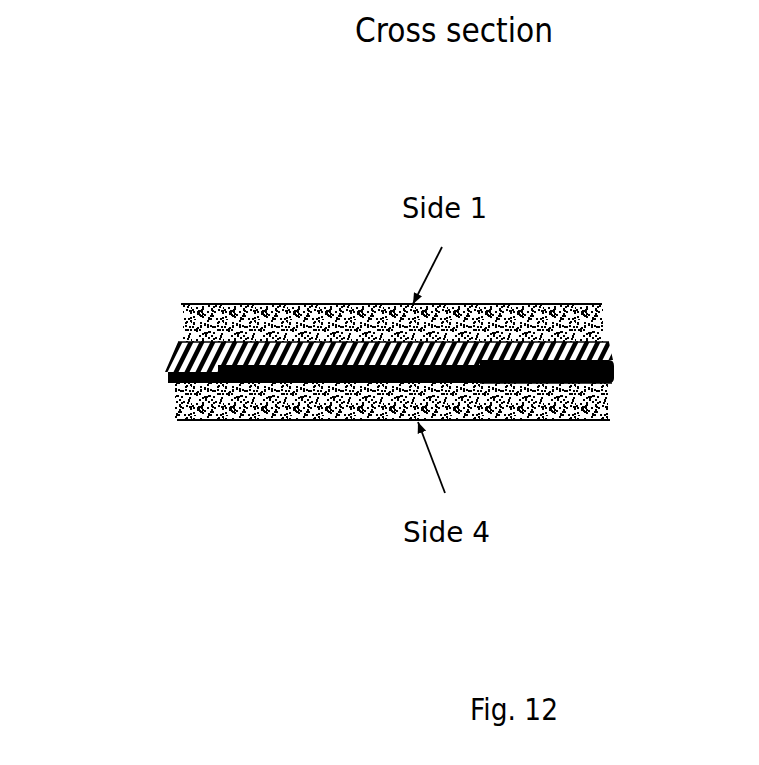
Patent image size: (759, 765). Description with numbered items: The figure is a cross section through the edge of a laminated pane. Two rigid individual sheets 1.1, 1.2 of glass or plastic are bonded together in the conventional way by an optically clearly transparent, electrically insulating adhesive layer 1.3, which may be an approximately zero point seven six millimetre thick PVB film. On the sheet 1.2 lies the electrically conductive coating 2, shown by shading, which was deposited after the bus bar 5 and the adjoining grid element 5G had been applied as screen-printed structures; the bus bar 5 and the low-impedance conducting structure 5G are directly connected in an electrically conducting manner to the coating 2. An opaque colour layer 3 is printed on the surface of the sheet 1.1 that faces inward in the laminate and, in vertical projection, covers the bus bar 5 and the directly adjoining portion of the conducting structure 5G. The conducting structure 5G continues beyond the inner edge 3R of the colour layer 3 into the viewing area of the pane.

The rigid individual sheet 1.1 is at (185, 322).
The rigid individual sheet 1.2 is at (230, 420).
The adhesive layer 1.3 is at (167, 368).
The coating 2 is at (612, 385).
The opaque colour layer 3 is at (603, 342).
The inner edge of the opaque colour layer 3R is at (377, 342).
The second bus bar 5 is at (613, 368).
The conducting structure 5G is at (617, 378).